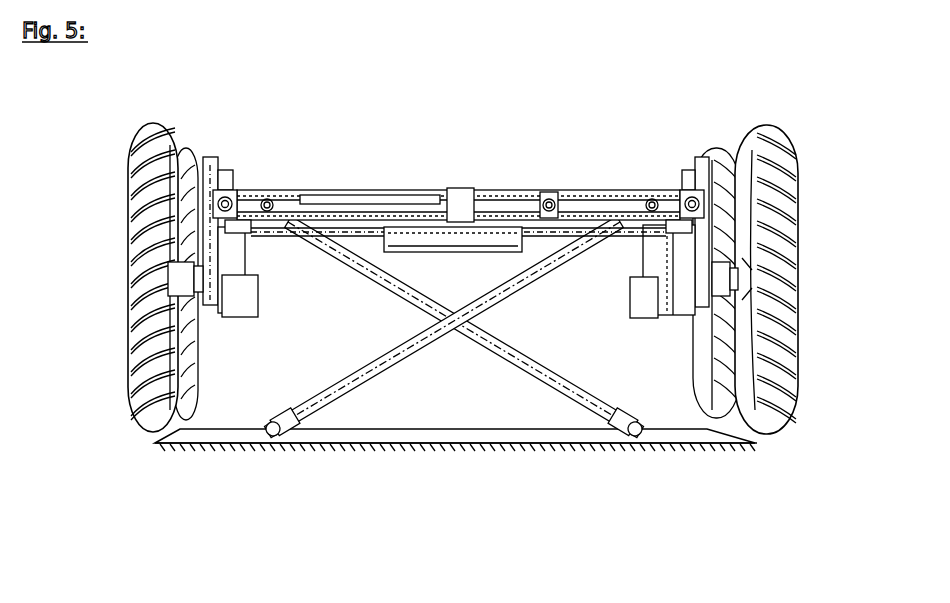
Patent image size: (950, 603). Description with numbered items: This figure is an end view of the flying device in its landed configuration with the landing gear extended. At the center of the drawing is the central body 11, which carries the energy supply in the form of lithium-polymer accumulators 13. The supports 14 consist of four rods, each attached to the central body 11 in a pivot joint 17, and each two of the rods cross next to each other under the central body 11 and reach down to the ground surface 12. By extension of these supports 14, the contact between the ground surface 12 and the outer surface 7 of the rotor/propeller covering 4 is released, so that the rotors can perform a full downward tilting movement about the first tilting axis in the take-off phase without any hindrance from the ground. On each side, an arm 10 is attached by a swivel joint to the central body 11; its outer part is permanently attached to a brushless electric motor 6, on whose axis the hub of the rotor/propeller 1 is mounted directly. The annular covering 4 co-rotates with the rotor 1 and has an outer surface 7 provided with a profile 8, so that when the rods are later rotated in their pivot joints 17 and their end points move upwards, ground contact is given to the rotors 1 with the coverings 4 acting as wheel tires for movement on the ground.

The rotor/propeller 1 is at (780, 279).
The rotor/propeller covering 4 is at (733, 228).
The brushless electric motor 6 is at (729, 276).
The outer surface 7 is at (767, 392).
The profile 8 is at (773, 333).
The arm 10 is at (220, 237).
The central body 11 is at (433, 188).
The ground surface 12 is at (497, 433).
The lithium-polymer accumulator 13 is at (397, 242).
The support 14 is at (325, 403).
The pivot joint 17 is at (267, 205).